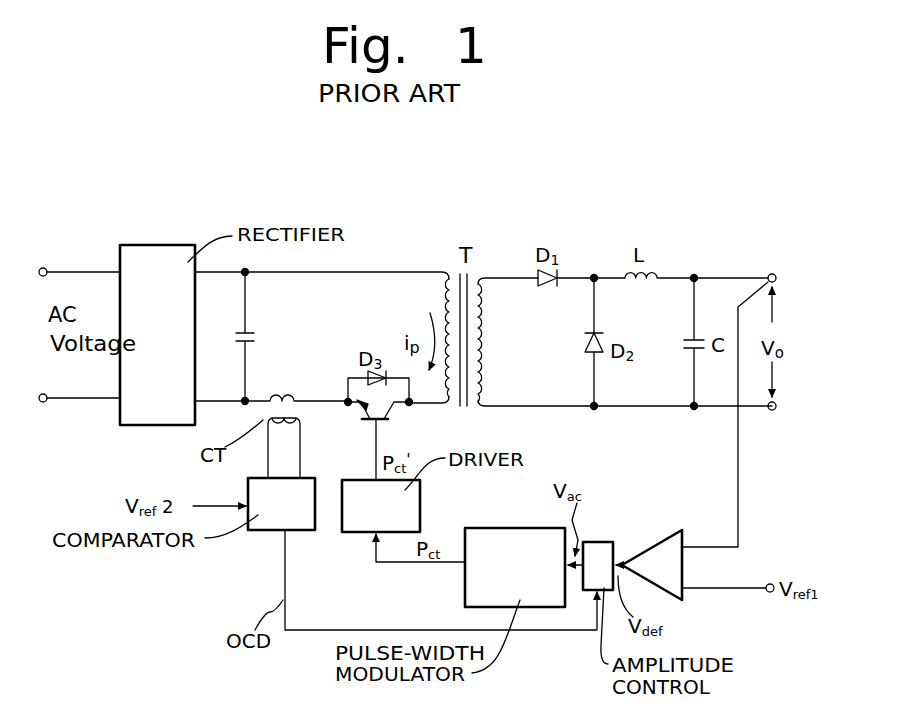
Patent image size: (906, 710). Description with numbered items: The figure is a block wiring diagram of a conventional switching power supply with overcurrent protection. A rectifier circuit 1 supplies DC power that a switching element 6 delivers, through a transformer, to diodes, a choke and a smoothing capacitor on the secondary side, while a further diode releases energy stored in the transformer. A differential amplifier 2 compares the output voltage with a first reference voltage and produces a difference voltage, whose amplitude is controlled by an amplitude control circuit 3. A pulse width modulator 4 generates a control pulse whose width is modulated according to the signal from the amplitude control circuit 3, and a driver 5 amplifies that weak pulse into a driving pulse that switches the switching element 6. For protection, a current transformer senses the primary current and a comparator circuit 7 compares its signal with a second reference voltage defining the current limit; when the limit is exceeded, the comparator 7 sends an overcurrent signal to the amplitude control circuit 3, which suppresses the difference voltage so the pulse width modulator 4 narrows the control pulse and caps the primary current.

The rectifier circuit 1 is at (196, 246).
The differential amplifier 2 is at (665, 530).
The amplitude control circuit 3 is at (598, 540).
The pulse width modulator 4 is at (525, 537).
The driver 5 is at (408, 504).
The switching element 6 is at (390, 418).
The comparator circuit 7 is at (265, 528).